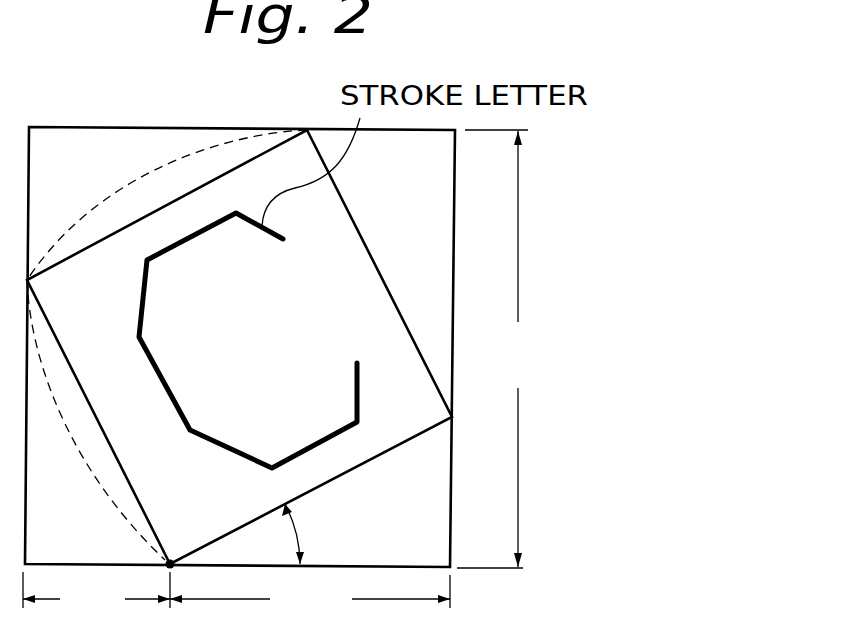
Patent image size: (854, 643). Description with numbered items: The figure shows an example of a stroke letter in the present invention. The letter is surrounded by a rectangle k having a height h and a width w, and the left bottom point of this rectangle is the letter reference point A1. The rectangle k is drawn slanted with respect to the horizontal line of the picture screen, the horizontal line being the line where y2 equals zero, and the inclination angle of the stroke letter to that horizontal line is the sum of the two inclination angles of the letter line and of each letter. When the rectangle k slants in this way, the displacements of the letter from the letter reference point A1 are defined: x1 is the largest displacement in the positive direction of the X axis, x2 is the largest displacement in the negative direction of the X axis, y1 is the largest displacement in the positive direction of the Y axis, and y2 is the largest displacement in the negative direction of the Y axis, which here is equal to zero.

The rectangle k is at (362, 241).
The width w is at (167, 205).
The height h is at (96, 420).
The letter reference point A1 is at (176, 543).
The largest displacement in the positive direction of X axis x1 is at (310, 594).
The largest displacement in the negative direction of X axis x2 is at (96, 592).
The largest displacement in the positive direction of Y axis y1 is at (496, 348).
The largest displacement in the negative direction of Y axis y2 is at (530, 548).